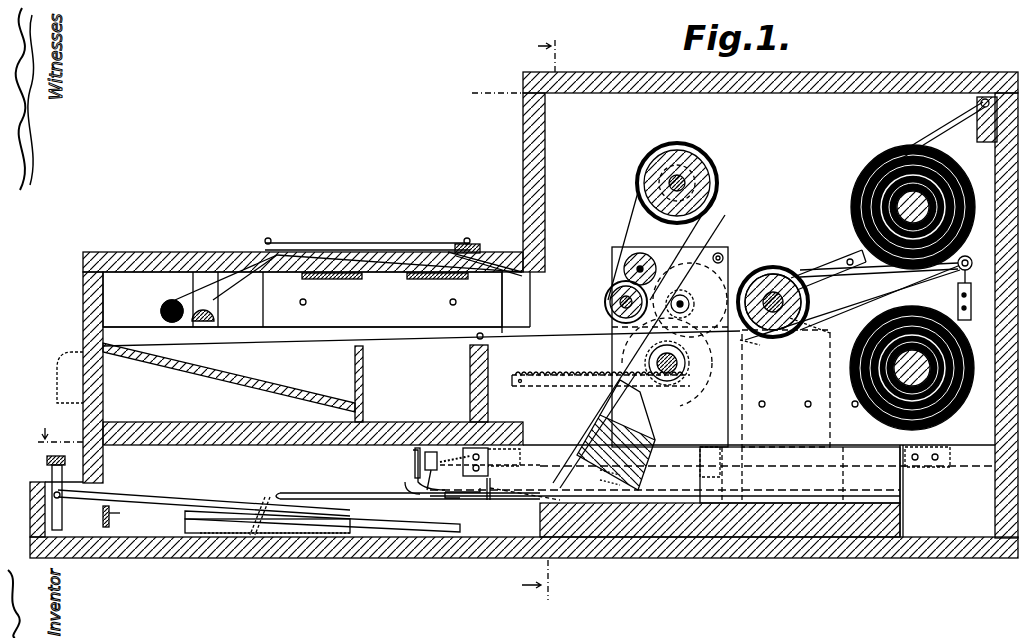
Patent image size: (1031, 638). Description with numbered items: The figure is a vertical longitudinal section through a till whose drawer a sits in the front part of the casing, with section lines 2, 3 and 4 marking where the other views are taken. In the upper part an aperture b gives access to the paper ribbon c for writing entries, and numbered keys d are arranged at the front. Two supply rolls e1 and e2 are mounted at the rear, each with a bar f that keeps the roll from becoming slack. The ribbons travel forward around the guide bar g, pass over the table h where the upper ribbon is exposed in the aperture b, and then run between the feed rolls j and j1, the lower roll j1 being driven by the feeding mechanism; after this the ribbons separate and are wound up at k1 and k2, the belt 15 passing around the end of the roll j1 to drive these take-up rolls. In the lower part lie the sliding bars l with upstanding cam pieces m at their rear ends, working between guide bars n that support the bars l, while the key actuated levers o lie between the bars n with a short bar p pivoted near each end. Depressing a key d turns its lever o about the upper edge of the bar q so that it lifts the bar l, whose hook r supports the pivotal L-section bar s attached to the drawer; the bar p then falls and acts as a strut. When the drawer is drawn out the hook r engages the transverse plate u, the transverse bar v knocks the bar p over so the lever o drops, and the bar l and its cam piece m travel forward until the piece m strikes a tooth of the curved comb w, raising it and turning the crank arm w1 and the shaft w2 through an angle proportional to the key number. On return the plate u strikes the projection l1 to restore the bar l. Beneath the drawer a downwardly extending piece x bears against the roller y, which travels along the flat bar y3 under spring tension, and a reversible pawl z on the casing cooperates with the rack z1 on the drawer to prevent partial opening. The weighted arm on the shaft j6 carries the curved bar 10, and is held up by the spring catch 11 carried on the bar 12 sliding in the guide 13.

The till drawer a is at (100, 420).
The aperture b is at (408, 250).
The paper ribbon c is at (228, 272).
The key d is at (47, 460).
The supply roll of paper e1 is at (851, 206).
The supply roll of paper e2 is at (930, 418).
The bar f is at (858, 172).
The guide bar g is at (165, 306).
The table h is at (380, 270).
The feed roll j is at (620, 266).
The feed roll j1 is at (603, 303).
The shaft j6 is at (703, 260).
The winding roll k1 is at (776, 267).
The winding roll k2 is at (718, 187).
The sliding bar l is at (487, 500).
The projection l1 is at (520, 496).
The cam piece m is at (730, 450).
The guide bar n is at (350, 490).
The key actuated lever o is at (160, 505).
The short bar p is at (395, 535).
The bar q is at (118, 518).
The hook r is at (448, 498).
The pivotal bar s is at (465, 430).
The transverse plate u is at (510, 470).
The transverse bar v is at (398, 425).
The comb w is at (663, 455).
The crank arm w1 is at (612, 405).
The shaft w2 is at (690, 394).
The downwardly extending piece x is at (434, 428).
The roller y is at (405, 484).
The flat bar y3 is at (290, 495).
The reversible pawl z is at (472, 340).
The rack z1 is at (520, 386).
The section line 2 is at (488, 97).
The section line 3 is at (51, 440).
The section line 4 is at (540, 323).
The curved bar 10 is at (780, 338).
The spring catch 11 is at (822, 333).
The bar 12 is at (872, 280).
The guide 13 is at (852, 318).
The belt 15 is at (635, 218).